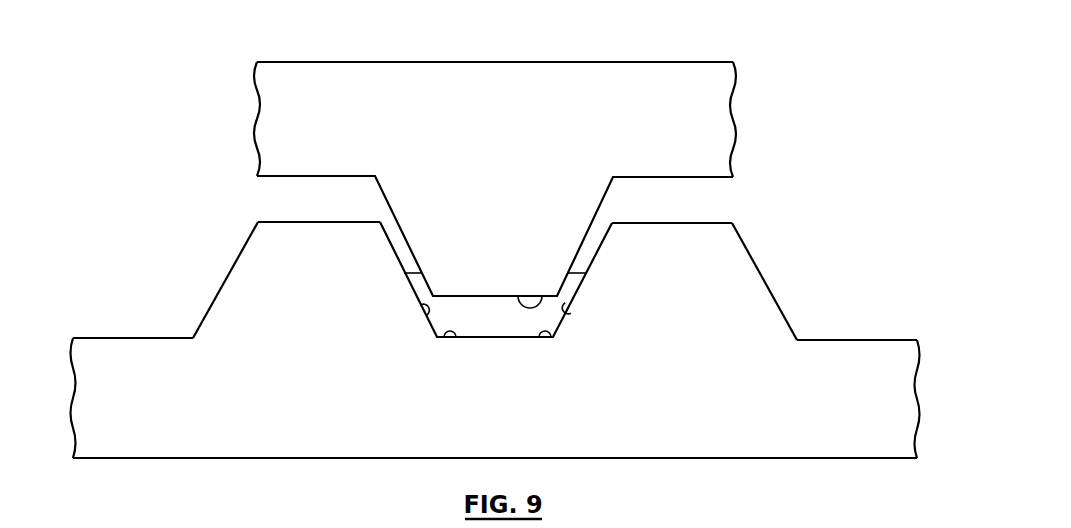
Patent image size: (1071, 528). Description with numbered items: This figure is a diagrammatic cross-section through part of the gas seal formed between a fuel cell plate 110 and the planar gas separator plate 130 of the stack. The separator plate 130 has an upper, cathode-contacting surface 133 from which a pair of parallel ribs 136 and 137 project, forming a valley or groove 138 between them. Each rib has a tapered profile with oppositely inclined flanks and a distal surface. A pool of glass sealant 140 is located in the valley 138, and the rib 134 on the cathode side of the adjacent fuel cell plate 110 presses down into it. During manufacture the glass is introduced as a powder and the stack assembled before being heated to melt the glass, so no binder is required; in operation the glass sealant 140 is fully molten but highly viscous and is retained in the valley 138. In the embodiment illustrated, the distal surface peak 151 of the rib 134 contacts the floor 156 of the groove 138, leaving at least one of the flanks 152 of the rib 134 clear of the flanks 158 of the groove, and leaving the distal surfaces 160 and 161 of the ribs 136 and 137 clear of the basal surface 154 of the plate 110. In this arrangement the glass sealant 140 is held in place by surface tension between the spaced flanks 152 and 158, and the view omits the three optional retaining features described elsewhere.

The fuel cell plate 110 is at (503, 97).
The planar gas separator plate 130 is at (815, 430).
The surface 133 is at (93, 337).
The rib 134 is at (488, 202).
The rib 136 is at (755, 312).
The rib 137 is at (223, 315).
The valley 138 is at (445, 337).
The glass sealant 140 is at (496, 279).
The distal surface peak 151 is at (518, 294).
The flanks 152 is at (407, 243).
The basal surface 154 is at (300, 177).
The floor 156 is at (553, 337).
The flanks 158 is at (420, 309).
The distal surface 160 is at (657, 223).
The distal surface 161 is at (327, 222).